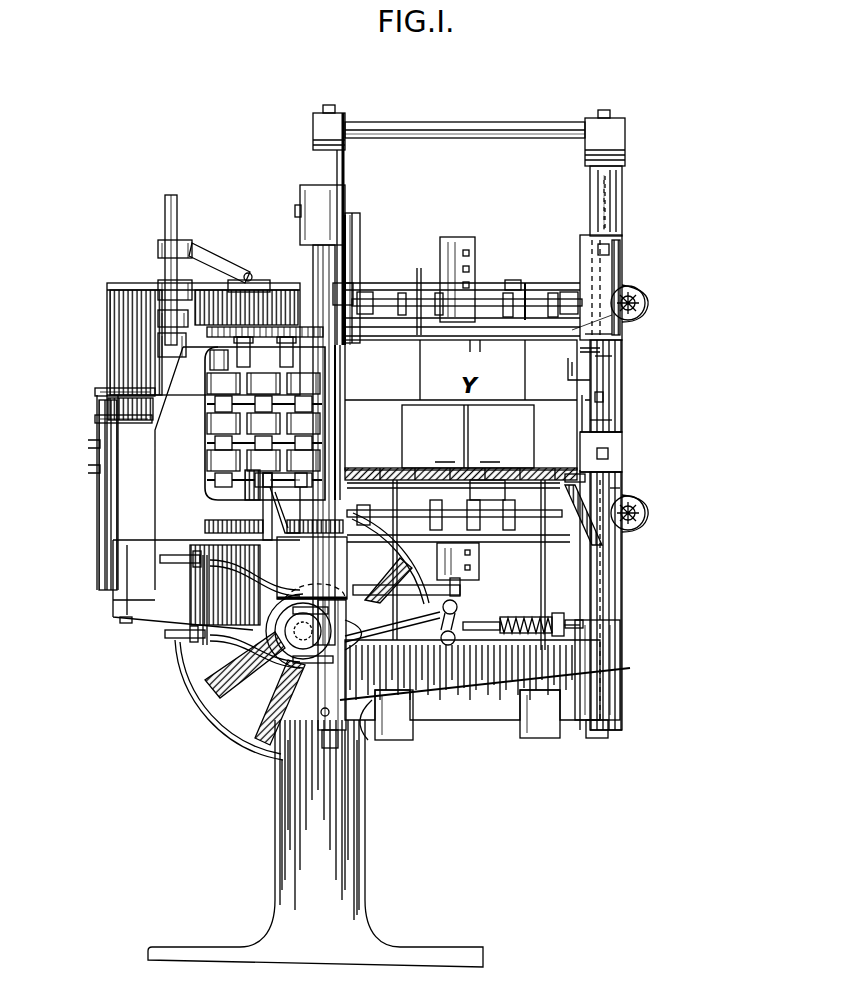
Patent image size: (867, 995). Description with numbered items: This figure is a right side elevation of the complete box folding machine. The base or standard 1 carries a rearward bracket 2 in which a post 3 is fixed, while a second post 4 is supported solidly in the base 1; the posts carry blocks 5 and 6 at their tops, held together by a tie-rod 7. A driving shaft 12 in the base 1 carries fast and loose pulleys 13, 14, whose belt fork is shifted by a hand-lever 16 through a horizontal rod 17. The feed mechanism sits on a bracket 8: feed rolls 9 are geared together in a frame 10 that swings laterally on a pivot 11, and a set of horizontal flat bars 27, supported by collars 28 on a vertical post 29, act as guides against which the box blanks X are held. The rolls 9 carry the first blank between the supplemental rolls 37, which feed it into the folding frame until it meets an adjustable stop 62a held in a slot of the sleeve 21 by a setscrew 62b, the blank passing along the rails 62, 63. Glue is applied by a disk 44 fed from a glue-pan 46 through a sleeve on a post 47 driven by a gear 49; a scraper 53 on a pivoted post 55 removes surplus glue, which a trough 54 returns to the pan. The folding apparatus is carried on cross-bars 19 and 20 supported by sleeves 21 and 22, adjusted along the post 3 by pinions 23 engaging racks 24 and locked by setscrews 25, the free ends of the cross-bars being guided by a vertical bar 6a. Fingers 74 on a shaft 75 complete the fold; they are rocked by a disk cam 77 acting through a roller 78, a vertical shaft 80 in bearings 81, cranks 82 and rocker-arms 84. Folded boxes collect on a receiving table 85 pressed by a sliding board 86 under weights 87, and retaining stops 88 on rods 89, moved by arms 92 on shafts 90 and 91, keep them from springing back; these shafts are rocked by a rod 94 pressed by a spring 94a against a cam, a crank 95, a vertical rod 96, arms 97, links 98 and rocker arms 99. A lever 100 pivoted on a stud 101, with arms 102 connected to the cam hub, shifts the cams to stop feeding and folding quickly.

The base or standard 1 is at (345, 868).
The bracket 2 is at (445, 706).
The post 3 is at (610, 410).
The post 4 is at (315, 270).
The block 5 is at (623, 130).
The block 6 is at (340, 168).
The vertical bar 6a is at (352, 230).
The tie-rod 7 is at (470, 130).
The bracket 8 is at (128, 600).
The feed rolls 9 is at (235, 457).
The frame 10 is at (153, 468).
The pivot 11 is at (132, 626).
The driving shaft 12 is at (293, 635).
The fast pulley 13 is at (248, 660).
The loose pulley 14 is at (273, 722).
The hand-lever 16 is at (165, 560).
The horizontal rod 17 is at (450, 692).
The cross-bar 19 is at (530, 285).
The cross-bar 20 is at (600, 555).
The sleeve 21 is at (608, 372).
The sleeve 22 is at (622, 464).
The pinions 23 is at (640, 305).
The racks 24 is at (626, 275).
The setscrews 25 is at (612, 250).
The horizontal flat bars 27 is at (97, 415).
The collars 28 is at (163, 320).
The vertical post 29 is at (170, 220).
The supplemental rolls 37 is at (338, 405).
The glue disk 44 is at (290, 504).
The glue-pan 46 is at (319, 593).
The post 47 is at (340, 478).
The gear 49 is at (302, 520).
The scraper 53 is at (272, 500).
The trough 54 is at (205, 526).
The post 55 is at (226, 492).
The rail 62 is at (592, 350).
The adjustable stop 62a is at (600, 358).
The setscrew 62b is at (603, 420).
The rail 63 is at (600, 478).
The fingers 74 is at (537, 330).
The shaft 75 is at (505, 325).
The disk cam 77 is at (268, 700).
The roller 78 is at (368, 722).
The vertical shaft 80 is at (350, 240).
The bearings 81 is at (343, 288).
The cranks 82 is at (383, 325).
The rocker-arms 84 is at (418, 325).
The receiving table 85 is at (512, 470).
The sliding board 86 is at (468, 436).
The weights 87 is at (400, 725).
The retaining stops 88 is at (480, 352).
The rods 89 is at (512, 305).
The shaft 90 is at (460, 288).
The shaft 91 is at (532, 522).
The arms 92 is at (490, 522).
The rod 94 is at (488, 628).
The spring 94a is at (512, 622).
The crank 95 is at (585, 622).
The vertical rod 96 is at (605, 397).
The arms 97 is at (585, 335).
The links 98 is at (616, 490).
The rocker arms 99 is at (565, 328).
The lever 100 is at (165, 637).
The stud 101 is at (335, 735).
The arms 102 is at (300, 660).
The box blanks X is at (120, 300).